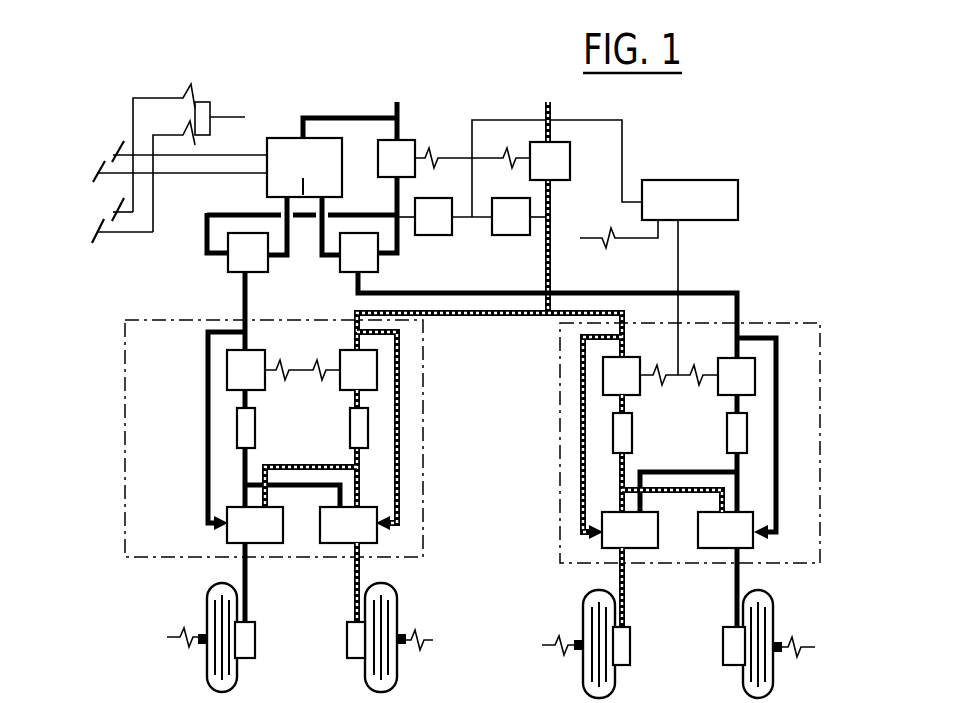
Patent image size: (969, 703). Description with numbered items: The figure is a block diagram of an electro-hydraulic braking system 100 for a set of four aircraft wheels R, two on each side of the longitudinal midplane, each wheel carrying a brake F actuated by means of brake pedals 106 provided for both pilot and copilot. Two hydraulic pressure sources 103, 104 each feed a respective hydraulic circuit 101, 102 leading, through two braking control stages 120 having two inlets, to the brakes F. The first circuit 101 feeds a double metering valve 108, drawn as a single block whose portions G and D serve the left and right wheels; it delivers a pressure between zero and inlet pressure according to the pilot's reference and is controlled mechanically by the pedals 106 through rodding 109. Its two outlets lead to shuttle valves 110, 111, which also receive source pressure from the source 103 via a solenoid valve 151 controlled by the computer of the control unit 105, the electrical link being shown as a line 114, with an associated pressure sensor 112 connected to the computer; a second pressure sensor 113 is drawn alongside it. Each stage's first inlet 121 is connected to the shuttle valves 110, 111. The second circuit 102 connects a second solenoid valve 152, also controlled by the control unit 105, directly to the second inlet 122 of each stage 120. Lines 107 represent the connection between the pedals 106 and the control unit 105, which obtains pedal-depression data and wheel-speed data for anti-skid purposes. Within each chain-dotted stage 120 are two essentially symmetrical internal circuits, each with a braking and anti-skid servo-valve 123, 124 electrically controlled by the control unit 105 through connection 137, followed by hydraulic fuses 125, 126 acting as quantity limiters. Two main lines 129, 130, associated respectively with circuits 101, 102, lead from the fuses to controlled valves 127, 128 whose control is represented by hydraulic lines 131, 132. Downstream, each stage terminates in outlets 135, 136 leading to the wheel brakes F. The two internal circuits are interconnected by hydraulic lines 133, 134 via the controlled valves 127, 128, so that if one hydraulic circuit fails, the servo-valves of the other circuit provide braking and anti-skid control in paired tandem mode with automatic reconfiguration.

The electro-hydraulic braking system 100 is at (454, 371).
The first hydraulic circuit 101 is at (343, 113).
The second hydraulic circuit 102 is at (562, 117).
The hydraulic pressure source 103 is at (396, 104).
The hydraulic pressure source 104 is at (546, 116).
The control unit 105 is at (738, 195).
The brake pedals 106 is at (114, 150).
The lines 107 is at (157, 97).
The double metering valve 108 is at (280, 137).
The rodding 109 is at (222, 174).
The shuttle valve 110 is at (228, 264).
The shuttle valve 111 is at (378, 266).
The pressure sensor 112 is at (433, 237).
The pressure sensor 113 is at (516, 237).
The line 114 is at (623, 150).
The braking control stage 120 is at (116, 433).
The first inlet 121 is at (250, 318).
The second inlet 122 is at (355, 312).
The braking and anti-skid servo-valve 123 is at (227, 362).
The braking and anti-skid servo-valve 124 is at (377, 368).
The hydraulic fuse 125 is at (237, 429).
The hydraulic fuse 126 is at (368, 428).
The controlled valve 127 is at (227, 532).
The controlled valve 128 is at (377, 540).
The main line 129 is at (494, 493).
The main line 130 is at (645, 447).
The hydraulic line 131 is at (208, 465).
The hydraulic line 132 is at (397, 470).
The hydraulic line 133 is at (305, 495).
The hydraulic line 134 is at (322, 465).
The outlet 135 is at (248, 556).
The outlet 136 is at (360, 556).
The connection 137 is at (301, 362).
The solenoid valve 151 is at (408, 140).
The solenoid valve 152 is at (570, 160).
The brake F is at (255, 638).
The wheel R is at (237, 680).